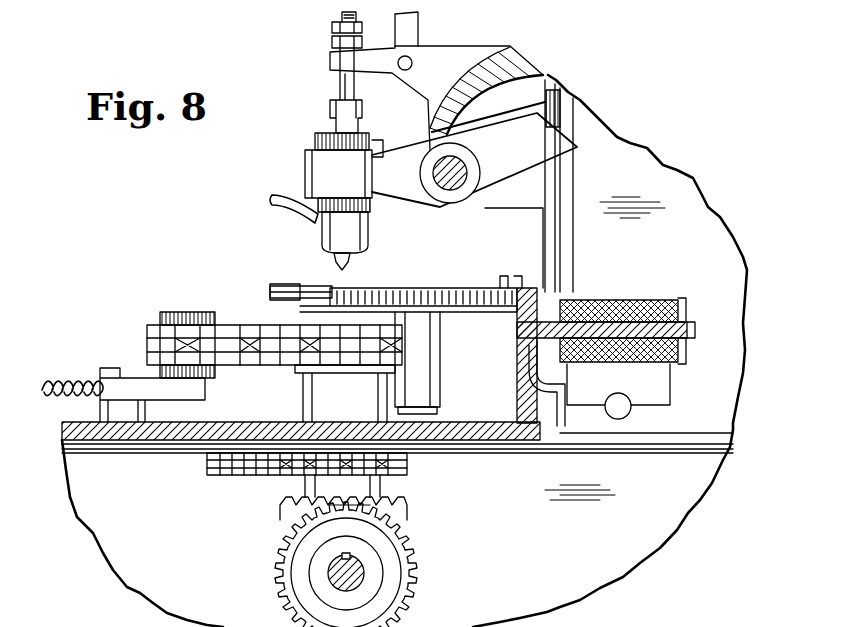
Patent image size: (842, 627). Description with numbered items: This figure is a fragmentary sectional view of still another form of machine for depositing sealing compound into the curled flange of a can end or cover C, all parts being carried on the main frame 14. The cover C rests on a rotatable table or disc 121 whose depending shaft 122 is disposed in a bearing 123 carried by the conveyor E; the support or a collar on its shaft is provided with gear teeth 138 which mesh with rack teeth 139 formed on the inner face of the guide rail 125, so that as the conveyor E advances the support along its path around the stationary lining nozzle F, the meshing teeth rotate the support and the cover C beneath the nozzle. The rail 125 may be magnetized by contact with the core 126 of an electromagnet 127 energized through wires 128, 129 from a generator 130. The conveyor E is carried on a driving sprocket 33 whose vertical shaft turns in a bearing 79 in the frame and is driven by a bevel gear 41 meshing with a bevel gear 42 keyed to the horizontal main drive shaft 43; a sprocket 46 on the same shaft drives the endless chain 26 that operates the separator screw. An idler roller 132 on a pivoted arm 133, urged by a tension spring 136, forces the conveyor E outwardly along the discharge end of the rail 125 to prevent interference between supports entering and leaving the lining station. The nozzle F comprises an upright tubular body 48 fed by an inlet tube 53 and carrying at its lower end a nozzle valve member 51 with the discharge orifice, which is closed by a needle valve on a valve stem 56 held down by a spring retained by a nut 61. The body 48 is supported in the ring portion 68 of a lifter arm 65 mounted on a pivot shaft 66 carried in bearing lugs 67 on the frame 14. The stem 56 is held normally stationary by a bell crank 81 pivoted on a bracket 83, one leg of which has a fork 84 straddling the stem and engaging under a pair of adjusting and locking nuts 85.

The frame 14 is at (722, 422).
The endless chain 26 is at (215, 480).
The driving sprocket 33 is at (405, 333).
The bevel gear 41 is at (395, 510).
The bevel gear 42 is at (412, 556).
The main drive shaft 43 is at (366, 572).
The sprocket 46 is at (283, 478).
The tubular body 48 is at (355, 224).
The nozzle valve member 51 is at (351, 273).
The inlet tube 53 is at (289, 208).
The valve stem 56 is at (341, 83).
The nut 61 is at (333, 105).
The lifter arm 65 is at (393, 162).
The pivot shaft 66 is at (452, 186).
The bearing lugs 67 is at (516, 188).
The ring portion 68 is at (350, 185).
The hub 79 is at (325, 398).
The bell crank 81 is at (377, 60).
The bracket 83 is at (488, 57).
The fork 84 is at (340, 60).
The adjusting and locking nuts 85 is at (333, 41).
The rotatable tables or discs 121 is at (461, 288).
The depending shafts 122 is at (431, 415).
The bearings 123 is at (420, 377).
The guide rail 125 is at (519, 284).
The core 126 is at (598, 328).
The electromagnet 127 is at (645, 318).
The wire 128 is at (586, 405).
The wire 129 is at (670, 389).
The generator 130 is at (632, 410).
The idler roller 132 is at (178, 315).
The arm 133 is at (170, 388).
The tension spring 136 is at (52, 375).
The gear teeth 138 is at (328, 290).
The rack teeth 139 is at (282, 292).
The end member or cover C is at (441, 288).
The conveyor E is at (139, 325).
The lining nozzle F is at (356, 236).